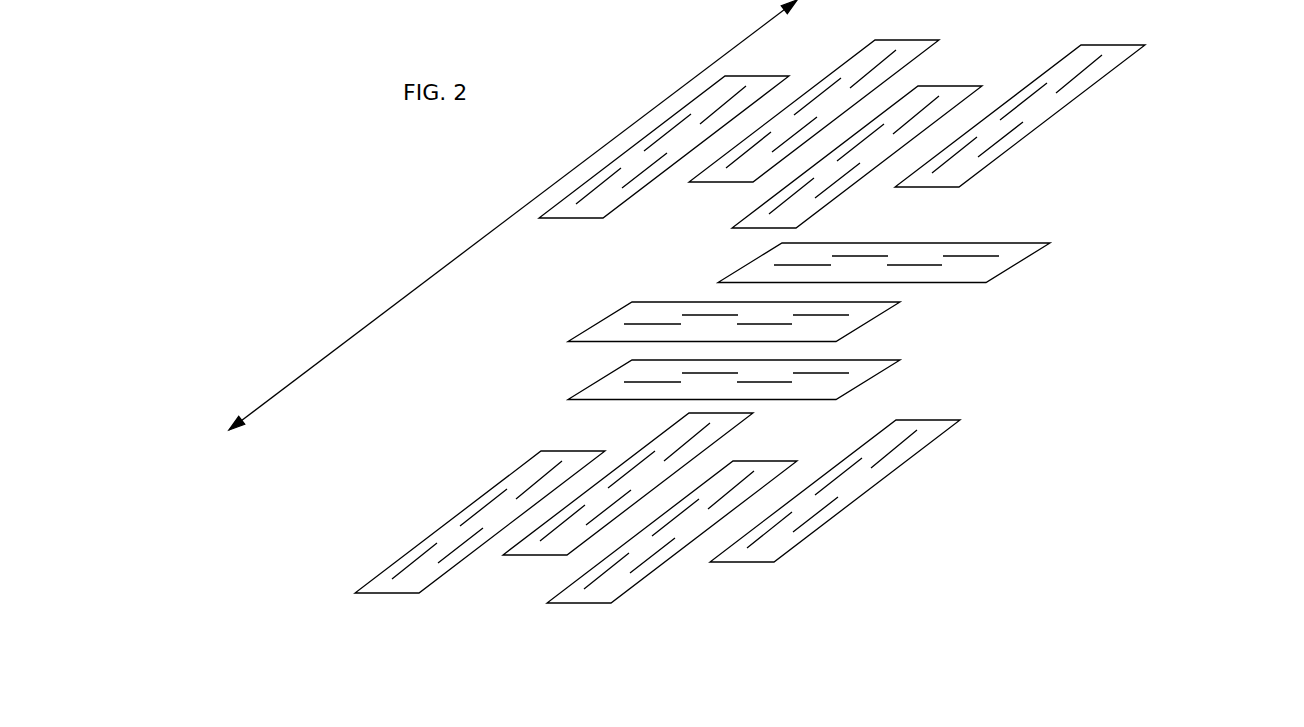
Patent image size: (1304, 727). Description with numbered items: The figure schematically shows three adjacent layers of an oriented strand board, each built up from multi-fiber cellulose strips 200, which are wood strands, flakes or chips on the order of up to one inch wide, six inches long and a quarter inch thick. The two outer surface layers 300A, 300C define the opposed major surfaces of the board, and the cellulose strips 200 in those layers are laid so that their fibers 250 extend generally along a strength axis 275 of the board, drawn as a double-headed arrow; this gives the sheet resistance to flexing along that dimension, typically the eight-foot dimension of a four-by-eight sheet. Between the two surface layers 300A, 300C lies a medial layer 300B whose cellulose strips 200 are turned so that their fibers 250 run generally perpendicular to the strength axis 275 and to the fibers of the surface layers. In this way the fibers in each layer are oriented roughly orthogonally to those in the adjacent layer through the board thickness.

The multi-fiber cellulose strips 200 is at (657, 135).
The fibers 250 is at (913, 118).
The strength axis 275 is at (665, 98).
The surface layer 300A is at (1172, 45).
The medial layer 300B is at (1077, 243).
The surface layer 300C is at (988, 420).